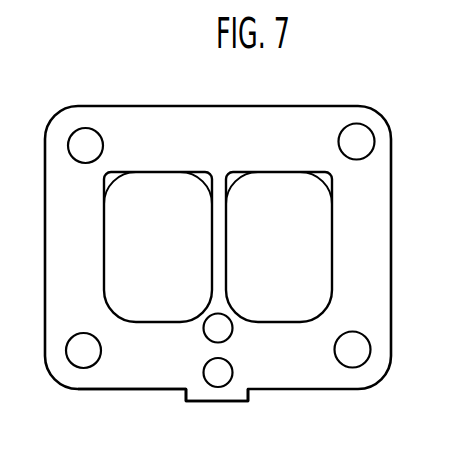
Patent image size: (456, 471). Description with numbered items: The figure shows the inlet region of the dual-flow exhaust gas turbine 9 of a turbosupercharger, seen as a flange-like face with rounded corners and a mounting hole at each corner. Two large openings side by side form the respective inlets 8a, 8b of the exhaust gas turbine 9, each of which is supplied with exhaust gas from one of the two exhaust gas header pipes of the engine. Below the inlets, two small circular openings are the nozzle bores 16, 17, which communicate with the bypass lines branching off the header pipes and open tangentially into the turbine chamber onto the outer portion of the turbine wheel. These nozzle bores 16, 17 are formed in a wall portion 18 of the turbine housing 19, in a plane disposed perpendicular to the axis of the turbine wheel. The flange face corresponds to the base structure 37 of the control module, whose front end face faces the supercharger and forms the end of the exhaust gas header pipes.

The exhaust gas turbine 9 is at (138, 92).
The base structure 37 is at (77, 200).
The inlet 8a is at (164, 285).
The inlet 8b is at (288, 285).
The nozzle bore 16 is at (219, 327).
The nozzle bore 17 is at (219, 373).
The wall portion 18 is at (232, 395).
The turbine housing 19 is at (125, 389).